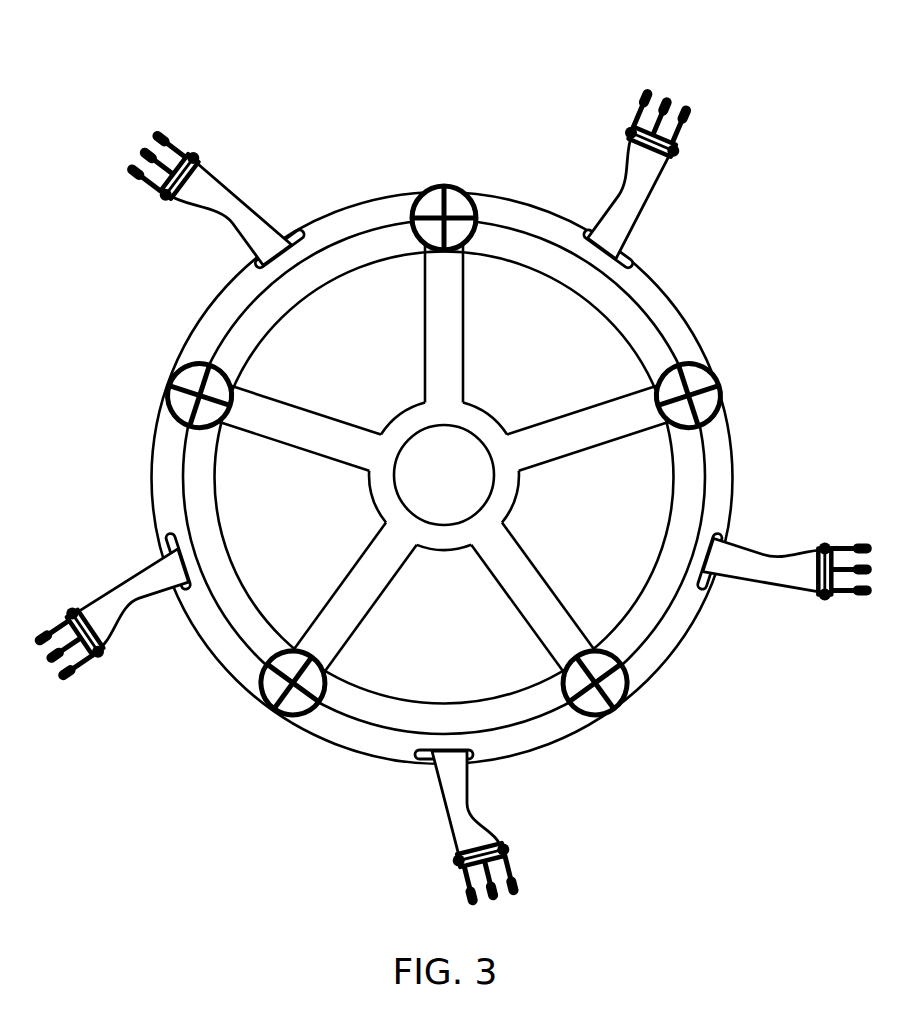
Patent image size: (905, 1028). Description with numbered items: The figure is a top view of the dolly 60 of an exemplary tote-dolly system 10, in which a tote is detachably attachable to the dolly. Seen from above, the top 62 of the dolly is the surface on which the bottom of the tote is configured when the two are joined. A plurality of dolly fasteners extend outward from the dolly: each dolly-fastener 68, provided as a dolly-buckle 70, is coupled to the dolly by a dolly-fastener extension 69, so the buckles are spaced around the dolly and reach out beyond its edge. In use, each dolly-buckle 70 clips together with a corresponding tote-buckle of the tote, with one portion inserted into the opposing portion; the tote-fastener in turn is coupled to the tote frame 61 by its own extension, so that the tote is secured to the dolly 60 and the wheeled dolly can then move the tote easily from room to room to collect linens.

The tote-dolly system 10 is at (710, 140).
The dolly 60 is at (350, 215).
The tote frame 61 is at (510, 218).
The top of the dolly 62 is at (675, 330).
The dolly-fastener 68 is at (153, 157).
The dolly-fastener extension 69 is at (230, 207).
The dolly-buckle 70 is at (173, 147).